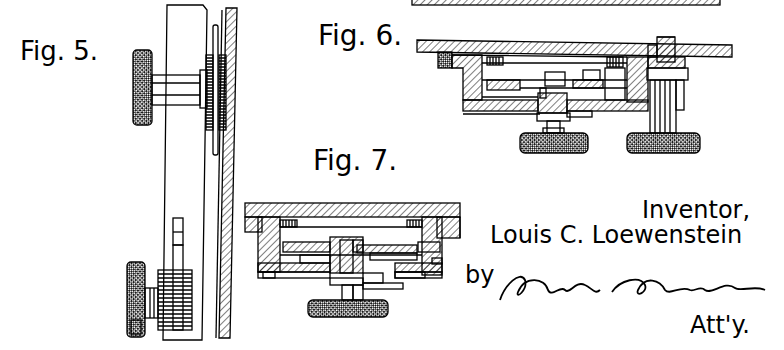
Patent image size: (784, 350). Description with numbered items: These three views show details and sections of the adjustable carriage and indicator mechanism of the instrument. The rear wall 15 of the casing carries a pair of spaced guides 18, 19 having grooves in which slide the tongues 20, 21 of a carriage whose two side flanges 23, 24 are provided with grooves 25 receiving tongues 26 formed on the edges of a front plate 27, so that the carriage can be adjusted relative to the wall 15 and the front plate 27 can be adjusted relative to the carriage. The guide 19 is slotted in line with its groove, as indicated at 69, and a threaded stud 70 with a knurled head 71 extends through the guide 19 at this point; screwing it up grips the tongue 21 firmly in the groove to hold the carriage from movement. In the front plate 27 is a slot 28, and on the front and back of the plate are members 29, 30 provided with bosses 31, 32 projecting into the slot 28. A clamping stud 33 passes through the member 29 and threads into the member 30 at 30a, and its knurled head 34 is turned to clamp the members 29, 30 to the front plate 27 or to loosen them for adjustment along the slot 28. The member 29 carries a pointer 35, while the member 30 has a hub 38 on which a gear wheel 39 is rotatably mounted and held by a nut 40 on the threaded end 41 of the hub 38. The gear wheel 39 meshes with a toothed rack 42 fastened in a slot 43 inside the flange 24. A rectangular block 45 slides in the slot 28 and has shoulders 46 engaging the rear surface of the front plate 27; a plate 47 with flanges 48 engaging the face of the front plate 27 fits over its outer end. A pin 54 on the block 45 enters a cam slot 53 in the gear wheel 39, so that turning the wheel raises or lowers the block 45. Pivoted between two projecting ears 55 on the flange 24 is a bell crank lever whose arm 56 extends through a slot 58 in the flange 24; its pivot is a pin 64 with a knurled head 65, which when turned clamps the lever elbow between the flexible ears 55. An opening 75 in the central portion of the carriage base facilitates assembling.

In FIG. 5, the rear wall 15 is at (233, 135).
In FIG. 6, the rear wall 15 is at (492, 40).
In FIG. 7, the rear wall 15 is at (262, 203).
In FIG. 6, the guide 18 is at (440, 62).
In FIG. 7, the guide 18 is at (264, 205).
In FIG. 7, the guide 19 is at (462, 232).
In FIG. 6, the tongue 20 is at (468, 82).
In FIG. 7, the tongue 20 is at (262, 248).
In FIG. 6, the tongue 21 is at (652, 50).
In FIG. 7, the tongue 21 is at (455, 215).
In FIG. 6, the side flange 23 is at (466, 92).
In FIG. 7, the side flange 23 is at (278, 217).
In FIG. 6, the side flange 24 is at (640, 57).
In FIG. 7, the side flange 24 is at (437, 217).
In FIG. 6, the groove 25 is at (470, 106).
In FIG. 7, the groove 25 is at (266, 273).
In FIG. 6, the tongue 26 is at (490, 112).
In FIG. 7, the tongue 26 is at (272, 276).
In FIG. 6, the front plate 27 is at (505, 114).
In FIG. 7, the front plate 27 is at (405, 278).
In FIG. 7, the slot 28 is at (336, 286).
In FIG. 7, the member 29 is at (330, 281).
In FIG. 7, the member 30 is at (296, 268).
In FIG. 7, the threaded engagement 30a is at (362, 245).
In FIG. 7, the boss 31 is at (384, 284).
In FIG. 7, the boss 32 is at (387, 245).
In FIG. 7, the clamping stud 33 is at (362, 313).
In FIG. 6, the knurled head 34 is at (555, 154).
In FIG. 7, the knurled head 34 is at (335, 317).
In FIG. 6, the pointer 35 is at (590, 118).
In FIG. 7, the pointer 35 is at (392, 290).
In FIG. 7, the hub 38 is at (306, 241).
In FIG. 6, the gear wheel 39 is at (500, 80).
In FIG. 7, the gear wheel 39 is at (290, 240).
In FIG. 6, the nut 40 is at (555, 72).
In FIG. 7, the nut 40 is at (331, 237).
In FIG. 7, the threaded end 41 is at (350, 240).
In FIG. 6, the toothed rack 42 is at (622, 62).
In FIG. 7, the toothed rack 42 is at (442, 249).
In FIG. 6, the slot 43 is at (686, 66).
In FIG. 7, the slot 43 is at (440, 262).
In FIG. 6, the rectangular block 45 is at (540, 118).
In FIG. 6, the shoulder 46 is at (554, 77).
In FIG. 6, the plate 47 is at (540, 145).
In FIG. 6, the flange 48 is at (585, 120).
In FIG. 6, the cam slot 53 is at (584, 80).
In FIG. 6, the pin 54 is at (542, 90).
In FIG. 5, the ear 55 is at (163, 270).
In FIG. 6, the ear 55 is at (686, 84).
In FIG. 5, the arm 56 is at (176, 250).
In FIG. 6, the arm 56 is at (600, 75).
In FIG. 5, the slot 58 is at (176, 222).
In FIG. 5, the pin 64 is at (130, 280).
In FIG. 5, the knurled head 65 is at (130, 327).
In FIG. 5, the slot 69 is at (218, 45).
In FIG. 6, the slot 69 is at (690, 47).
In FIG. 5, the threaded stud 70 is at (232, 88).
In FIG. 6, the threaded stud 70 is at (678, 45).
In FIG. 5, the knurled head 71 is at (133, 122).
In FIG. 6, the knurled head 71 is at (700, 143).
In FIG. 7, the opening 75 is at (397, 228).